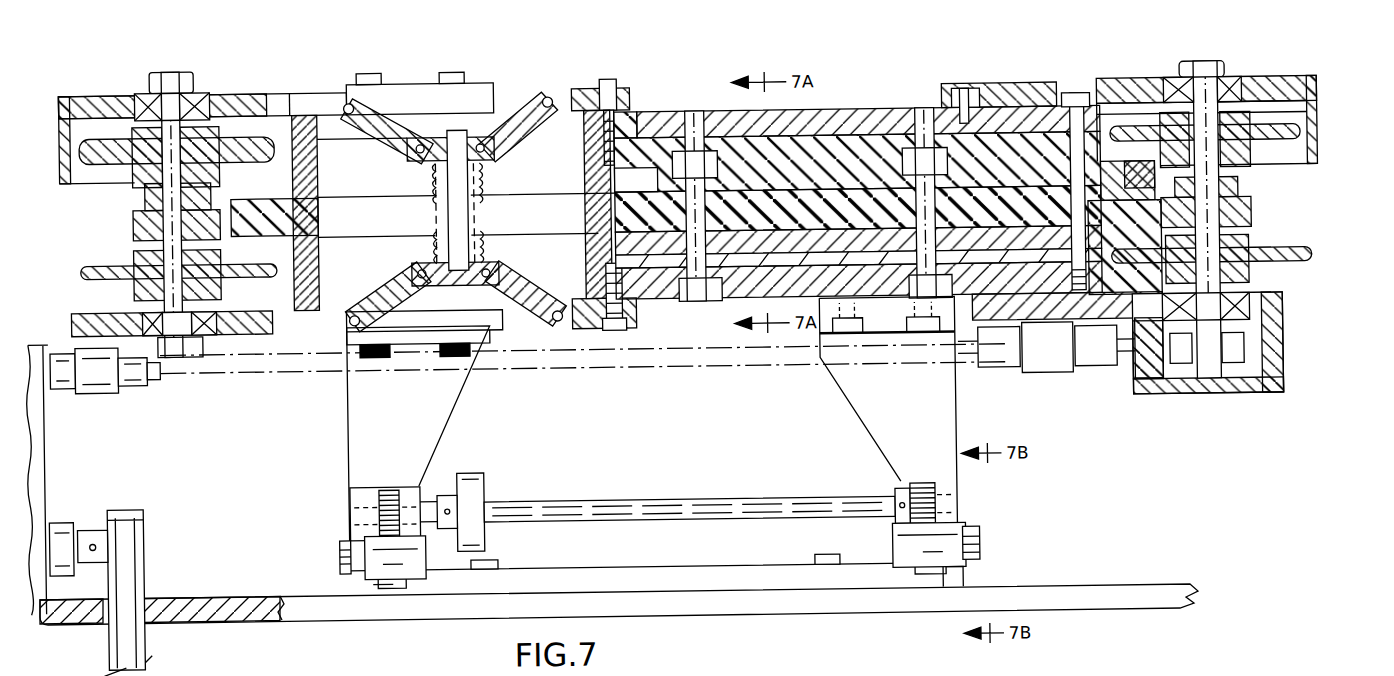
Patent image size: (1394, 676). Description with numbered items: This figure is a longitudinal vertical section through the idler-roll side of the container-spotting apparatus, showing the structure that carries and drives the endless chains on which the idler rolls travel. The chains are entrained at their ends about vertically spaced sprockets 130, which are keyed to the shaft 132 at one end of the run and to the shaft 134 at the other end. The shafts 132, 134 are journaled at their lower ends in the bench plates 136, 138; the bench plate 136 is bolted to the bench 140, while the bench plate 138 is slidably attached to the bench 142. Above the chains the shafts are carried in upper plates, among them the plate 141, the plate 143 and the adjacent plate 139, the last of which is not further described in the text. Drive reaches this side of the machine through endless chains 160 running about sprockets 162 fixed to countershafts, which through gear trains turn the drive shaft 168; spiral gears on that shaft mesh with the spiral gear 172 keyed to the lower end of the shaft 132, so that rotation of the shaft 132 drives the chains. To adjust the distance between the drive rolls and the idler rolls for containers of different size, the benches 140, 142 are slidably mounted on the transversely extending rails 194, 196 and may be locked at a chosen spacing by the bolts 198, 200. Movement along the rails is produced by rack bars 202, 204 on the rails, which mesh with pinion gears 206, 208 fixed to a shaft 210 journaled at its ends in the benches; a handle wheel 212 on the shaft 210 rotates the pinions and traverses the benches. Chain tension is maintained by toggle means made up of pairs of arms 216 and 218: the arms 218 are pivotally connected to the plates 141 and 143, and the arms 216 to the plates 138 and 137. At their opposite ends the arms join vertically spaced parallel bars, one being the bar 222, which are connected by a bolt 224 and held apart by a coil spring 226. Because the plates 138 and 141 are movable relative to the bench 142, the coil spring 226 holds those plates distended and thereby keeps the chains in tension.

The sprockets 130 is at (122, 150).
The shaft 132 is at (1228, 78).
The shaft 134 is at (193, 95).
The bench plate 136 is at (1050, 370).
The plate 137 is at (590, 332).
The bench plate 138 is at (140, 312).
The clamp block 139 is at (1030, 86).
The bench 140 is at (858, 420).
The plate 141 is at (256, 98).
The bench 142 is at (346, 406).
The plate 143 is at (606, 86).
The endless chains 160 is at (125, 572).
The sprockets 162 is at (141, 526).
The drive shaft 168 is at (250, 362).
The spiral gear 172 is at (1286, 350).
The rail 194 is at (385, 582).
The rail 196 is at (962, 572).
The bolt 198 is at (343, 548).
The bolt 200 is at (978, 545).
The rack bar 202 is at (346, 523).
The rack bar 204 is at (880, 540).
The pinion gear 206 is at (350, 495).
The pinion gear 208 is at (918, 486).
The shaft 210 is at (536, 500).
The handle wheel 212 is at (466, 478).
The arms 216 is at (376, 300).
The arms 218 is at (400, 100).
The bar 222 is at (432, 125).
The bolt 224 is at (470, 195).
The coil spring 226 is at (436, 180).